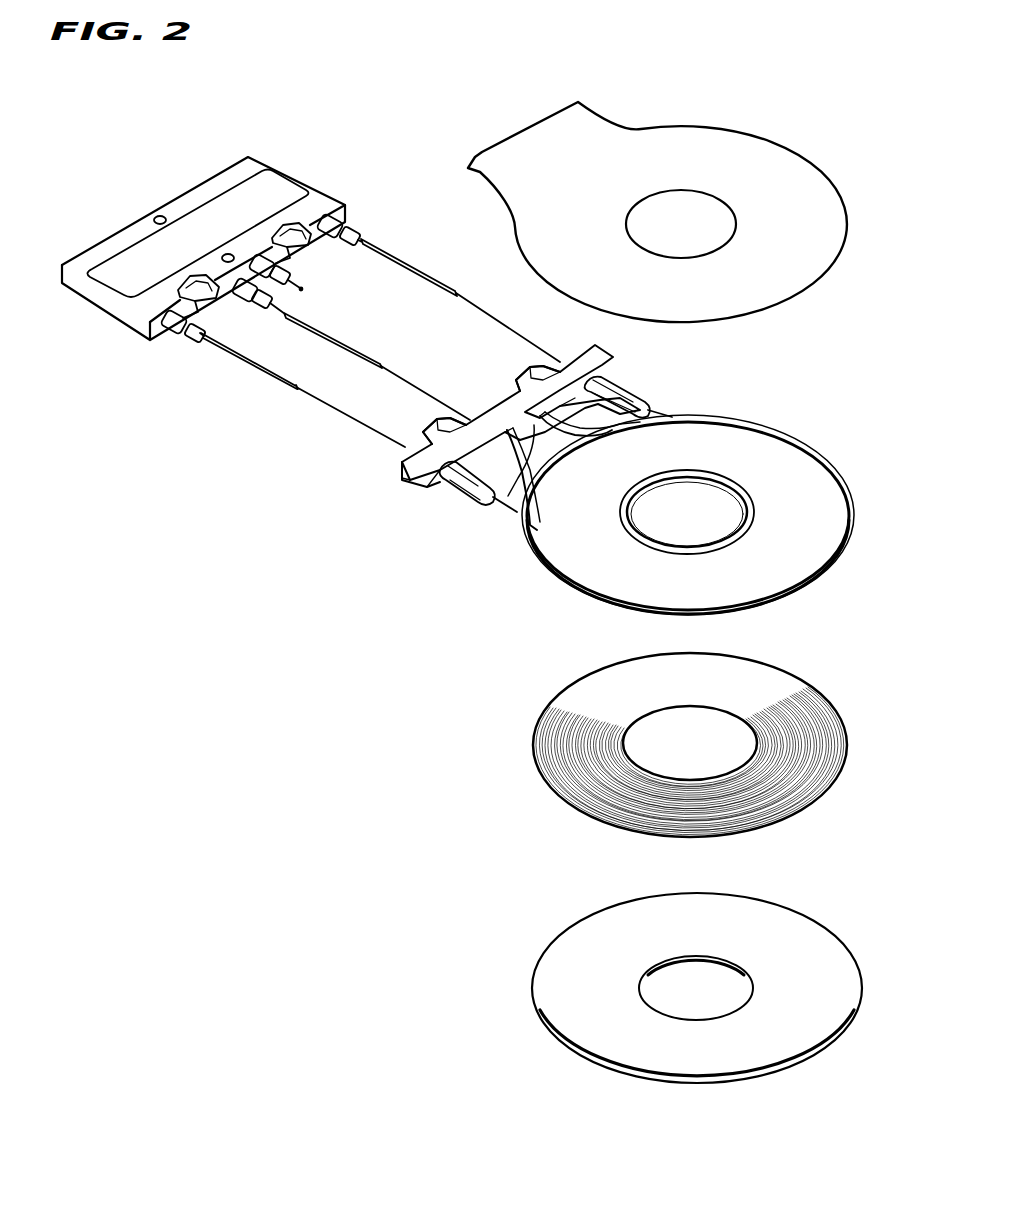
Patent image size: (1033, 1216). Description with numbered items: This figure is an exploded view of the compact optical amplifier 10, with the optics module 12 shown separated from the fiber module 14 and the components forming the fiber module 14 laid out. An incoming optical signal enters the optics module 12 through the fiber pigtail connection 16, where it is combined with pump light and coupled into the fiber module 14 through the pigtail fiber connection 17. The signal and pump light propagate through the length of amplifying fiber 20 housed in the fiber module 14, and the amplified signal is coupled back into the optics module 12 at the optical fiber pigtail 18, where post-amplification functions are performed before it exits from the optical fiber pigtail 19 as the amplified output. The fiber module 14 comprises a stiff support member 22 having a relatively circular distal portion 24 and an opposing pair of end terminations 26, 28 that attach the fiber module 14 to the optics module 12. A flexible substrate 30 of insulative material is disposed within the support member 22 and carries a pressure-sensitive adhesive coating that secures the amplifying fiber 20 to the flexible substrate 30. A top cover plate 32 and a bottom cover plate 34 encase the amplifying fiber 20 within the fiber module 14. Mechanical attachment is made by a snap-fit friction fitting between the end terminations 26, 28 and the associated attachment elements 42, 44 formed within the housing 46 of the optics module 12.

The compact optical amplifier 10 is at (176, 110).
The optics module 12 is at (110, 313).
The fiber module 14 is at (708, 84).
The fiber pigtail connection 16 is at (187, 338).
The pigtail fiber connection 17 is at (276, 292).
The optical fiber pigtail 18 is at (284, 270).
The optical fiber pigtail 19 is at (355, 226).
The amplifying fiber 20 is at (557, 762).
The stiff support member 22 is at (447, 505).
The circular distal portion 24 is at (774, 455).
The end termination 26 is at (434, 428).
The end termination 28 is at (526, 372).
The flexible substrate 30 is at (792, 556).
The top cover plate 32 is at (800, 168).
The bottom cover plate 34 is at (563, 1008).
The attachment element 42 is at (186, 290).
The attachment element 44 is at (282, 235).
The housing 46 is at (80, 258).